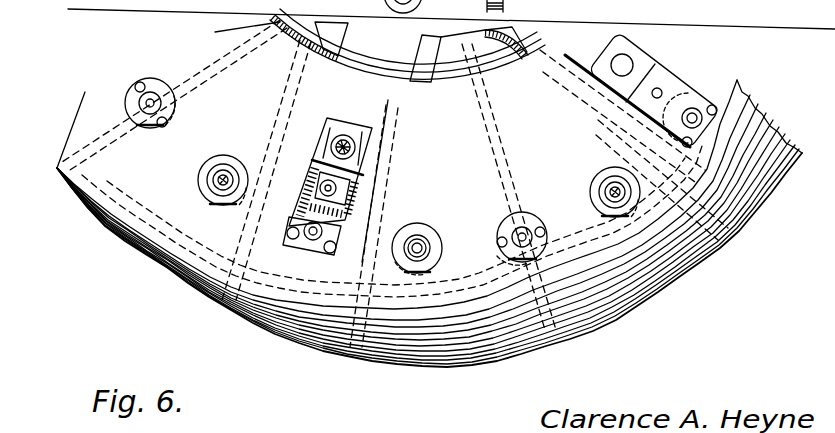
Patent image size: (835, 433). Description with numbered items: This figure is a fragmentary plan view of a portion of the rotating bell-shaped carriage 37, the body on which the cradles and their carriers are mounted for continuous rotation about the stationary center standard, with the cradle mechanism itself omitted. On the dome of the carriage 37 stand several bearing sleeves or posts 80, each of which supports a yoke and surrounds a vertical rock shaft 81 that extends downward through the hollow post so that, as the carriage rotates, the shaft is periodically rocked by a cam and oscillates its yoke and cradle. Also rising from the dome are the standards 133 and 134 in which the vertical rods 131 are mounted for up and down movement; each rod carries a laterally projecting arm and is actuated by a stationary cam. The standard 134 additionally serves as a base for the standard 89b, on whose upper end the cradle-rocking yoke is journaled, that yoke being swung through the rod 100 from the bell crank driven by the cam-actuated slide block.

The carriage 37 is at (437, 353).
The bearing sleeve or post 80 is at (432, 240).
The rock shaft 81 is at (218, 184).
The standard 89b is at (290, 208).
The rod 100 is at (312, 175).
The vertical rod 131 is at (312, 240).
The standard 133 is at (176, 113).
The standard 134 is at (712, 66).